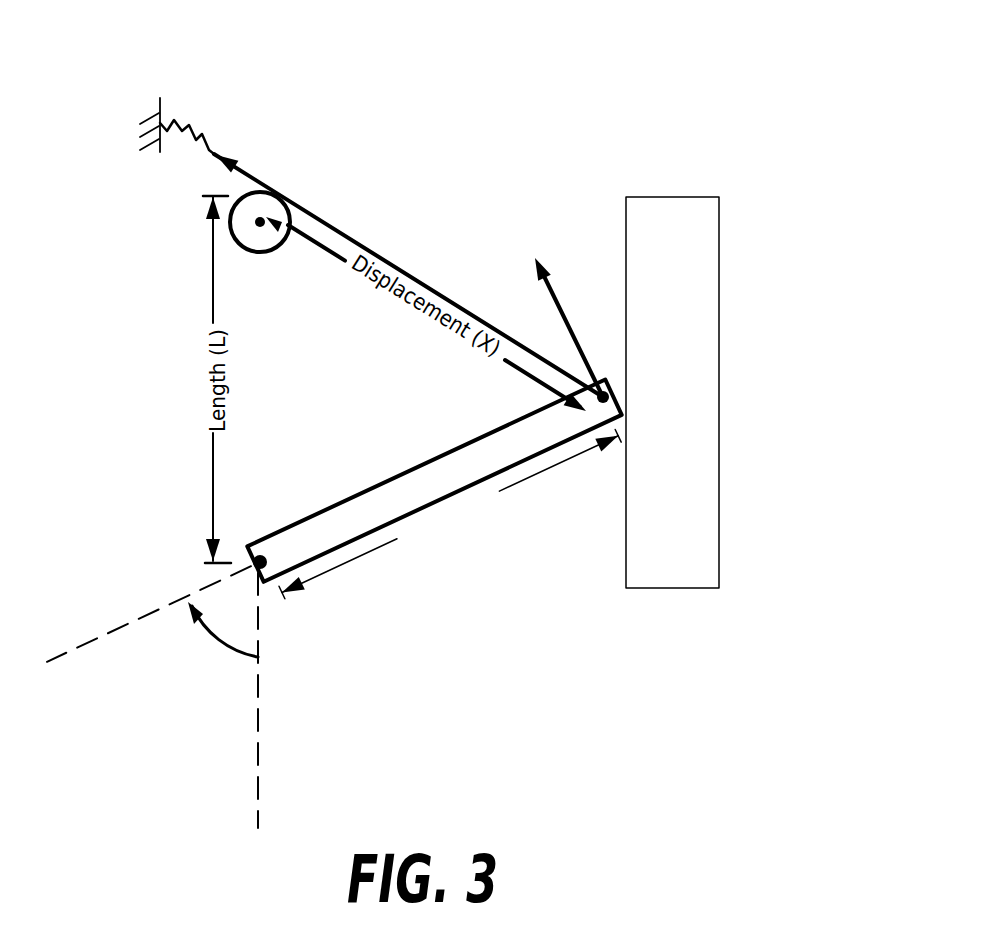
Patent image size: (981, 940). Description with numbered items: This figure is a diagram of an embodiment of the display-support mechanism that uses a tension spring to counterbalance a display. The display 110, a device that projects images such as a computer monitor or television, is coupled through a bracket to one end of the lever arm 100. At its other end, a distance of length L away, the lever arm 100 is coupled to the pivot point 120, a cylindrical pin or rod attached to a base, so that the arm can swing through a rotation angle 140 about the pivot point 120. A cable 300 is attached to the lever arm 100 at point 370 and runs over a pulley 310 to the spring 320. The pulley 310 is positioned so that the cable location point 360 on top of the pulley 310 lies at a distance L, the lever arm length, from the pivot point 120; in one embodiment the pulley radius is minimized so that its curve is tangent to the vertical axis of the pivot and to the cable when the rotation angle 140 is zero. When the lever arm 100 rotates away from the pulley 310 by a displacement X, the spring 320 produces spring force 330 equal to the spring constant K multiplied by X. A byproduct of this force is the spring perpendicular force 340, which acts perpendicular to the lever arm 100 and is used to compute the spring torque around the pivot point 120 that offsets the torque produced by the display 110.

The lever arm 100 is at (434, 489).
The display 110 is at (690, 421).
The pivot point 120 is at (213, 691).
The rotation angle 140 is at (172, 702).
The cable 300 is at (408, 275).
The pulley 310 is at (172, 262).
The spring 320 is at (237, 81).
The spring force 330 is at (309, 130).
The spring perpendicular force 340 is at (681, 242).
The cable location point 360 is at (304, 192).
The cable coupling point 370 is at (601, 393).